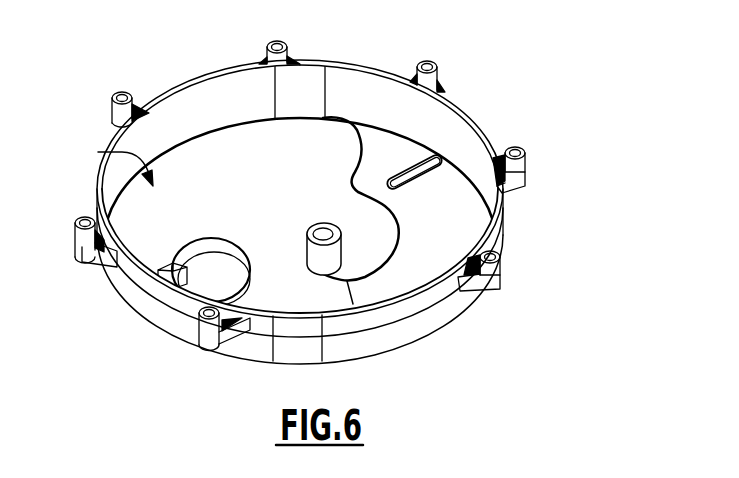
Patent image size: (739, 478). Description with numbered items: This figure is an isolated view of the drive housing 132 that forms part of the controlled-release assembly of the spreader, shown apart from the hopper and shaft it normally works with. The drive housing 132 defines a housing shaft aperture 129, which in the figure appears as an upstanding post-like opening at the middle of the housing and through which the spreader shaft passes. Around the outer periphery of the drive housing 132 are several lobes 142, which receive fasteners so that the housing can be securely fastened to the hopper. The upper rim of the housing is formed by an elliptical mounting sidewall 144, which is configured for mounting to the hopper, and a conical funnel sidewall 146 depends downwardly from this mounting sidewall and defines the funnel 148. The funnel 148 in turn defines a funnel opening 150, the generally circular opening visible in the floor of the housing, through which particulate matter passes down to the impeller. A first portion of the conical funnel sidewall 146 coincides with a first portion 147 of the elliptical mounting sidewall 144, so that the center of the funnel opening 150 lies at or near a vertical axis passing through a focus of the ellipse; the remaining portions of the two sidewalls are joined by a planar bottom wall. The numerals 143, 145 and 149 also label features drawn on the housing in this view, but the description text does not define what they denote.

The housing shaft aperture 129 is at (320, 226).
The drive housing 132 is at (448, 103).
The lobes 142 is at (526, 178).
The first sidewall portion 143 is at (198, 102).
The elliptical mounting sidewall 144 is at (356, 84).
The slot 145 is at (480, 170).
The conical funnel sidewall 146 is at (140, 243).
The first portion of elliptical mounting sidewall 147 is at (278, 128).
The funnel 148 is at (104, 162).
The partition wall 149 is at (347, 297).
The funnel opening 150 is at (213, 252).